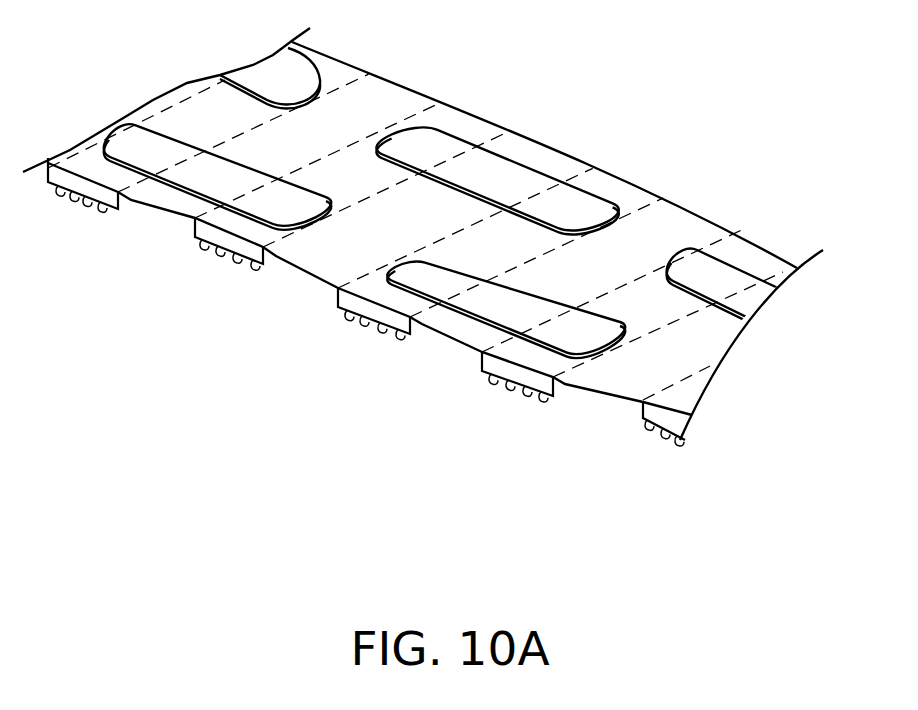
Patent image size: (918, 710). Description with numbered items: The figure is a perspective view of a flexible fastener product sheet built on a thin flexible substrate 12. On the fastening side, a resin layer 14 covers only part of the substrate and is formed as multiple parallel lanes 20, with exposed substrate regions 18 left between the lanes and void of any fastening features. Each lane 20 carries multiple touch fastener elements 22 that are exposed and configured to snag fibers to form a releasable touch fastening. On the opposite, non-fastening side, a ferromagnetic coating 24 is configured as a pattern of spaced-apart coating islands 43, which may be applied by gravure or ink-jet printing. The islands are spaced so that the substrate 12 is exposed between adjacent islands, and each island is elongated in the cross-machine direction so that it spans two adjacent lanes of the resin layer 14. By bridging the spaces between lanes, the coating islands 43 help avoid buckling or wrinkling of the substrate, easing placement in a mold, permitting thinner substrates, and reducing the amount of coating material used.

The flexible substrate 12 is at (707, 348).
The resin layer 14 is at (120, 208).
The exposed substrate regions 18 is at (303, 310).
The lane 20 is at (475, 442).
The touch fastener elements 22 is at (528, 392).
The ferromagnetic coating 24 is at (498, 152).
The coating islands 43 is at (457, 203).